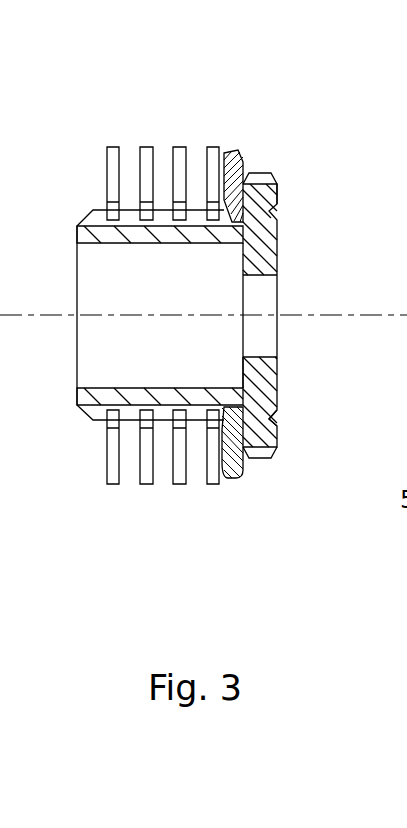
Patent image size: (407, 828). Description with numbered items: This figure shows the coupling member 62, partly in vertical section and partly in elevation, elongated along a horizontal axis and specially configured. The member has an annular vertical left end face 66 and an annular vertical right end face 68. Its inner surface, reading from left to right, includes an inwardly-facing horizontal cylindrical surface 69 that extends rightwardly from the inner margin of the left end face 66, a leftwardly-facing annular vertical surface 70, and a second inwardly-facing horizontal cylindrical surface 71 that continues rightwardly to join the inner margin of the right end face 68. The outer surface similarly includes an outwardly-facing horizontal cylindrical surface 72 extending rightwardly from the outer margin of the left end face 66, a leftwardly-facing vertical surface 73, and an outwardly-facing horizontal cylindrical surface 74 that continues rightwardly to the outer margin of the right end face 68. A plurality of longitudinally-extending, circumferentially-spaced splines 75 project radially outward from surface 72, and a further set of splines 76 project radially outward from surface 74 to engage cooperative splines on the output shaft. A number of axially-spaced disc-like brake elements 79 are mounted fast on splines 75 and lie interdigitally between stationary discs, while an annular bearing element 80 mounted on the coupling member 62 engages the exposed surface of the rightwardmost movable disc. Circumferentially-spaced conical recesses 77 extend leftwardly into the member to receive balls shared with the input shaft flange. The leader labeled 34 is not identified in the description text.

The shaft 34 is at (0, 95).
The coupling member 62 is at (184, 112).
The left end face 66 is at (75, 241).
The right end face 68 is at (282, 379).
The inwardly-facing horizontal cylindrical surface 69 is at (176, 386).
The leftwardly-facing annular vertical surface 70 is at (241, 367).
The inwardly-facing horizontal cylindrical surface 71 is at (249, 283).
The outwardly-facing horizontal cylindrical surface 72 is at (91, 421).
The leftwardly-facing vertical surface 73 is at (222, 474).
The outwardly-facing horizontal cylindrical surface 74 is at (280, 187).
The splines 75 is at (94, 210).
The splines 76 is at (276, 170).
The conical recesses 77 is at (282, 425).
The brake elements 79 is at (138, 490).
The annular bearing element 80 is at (238, 156).